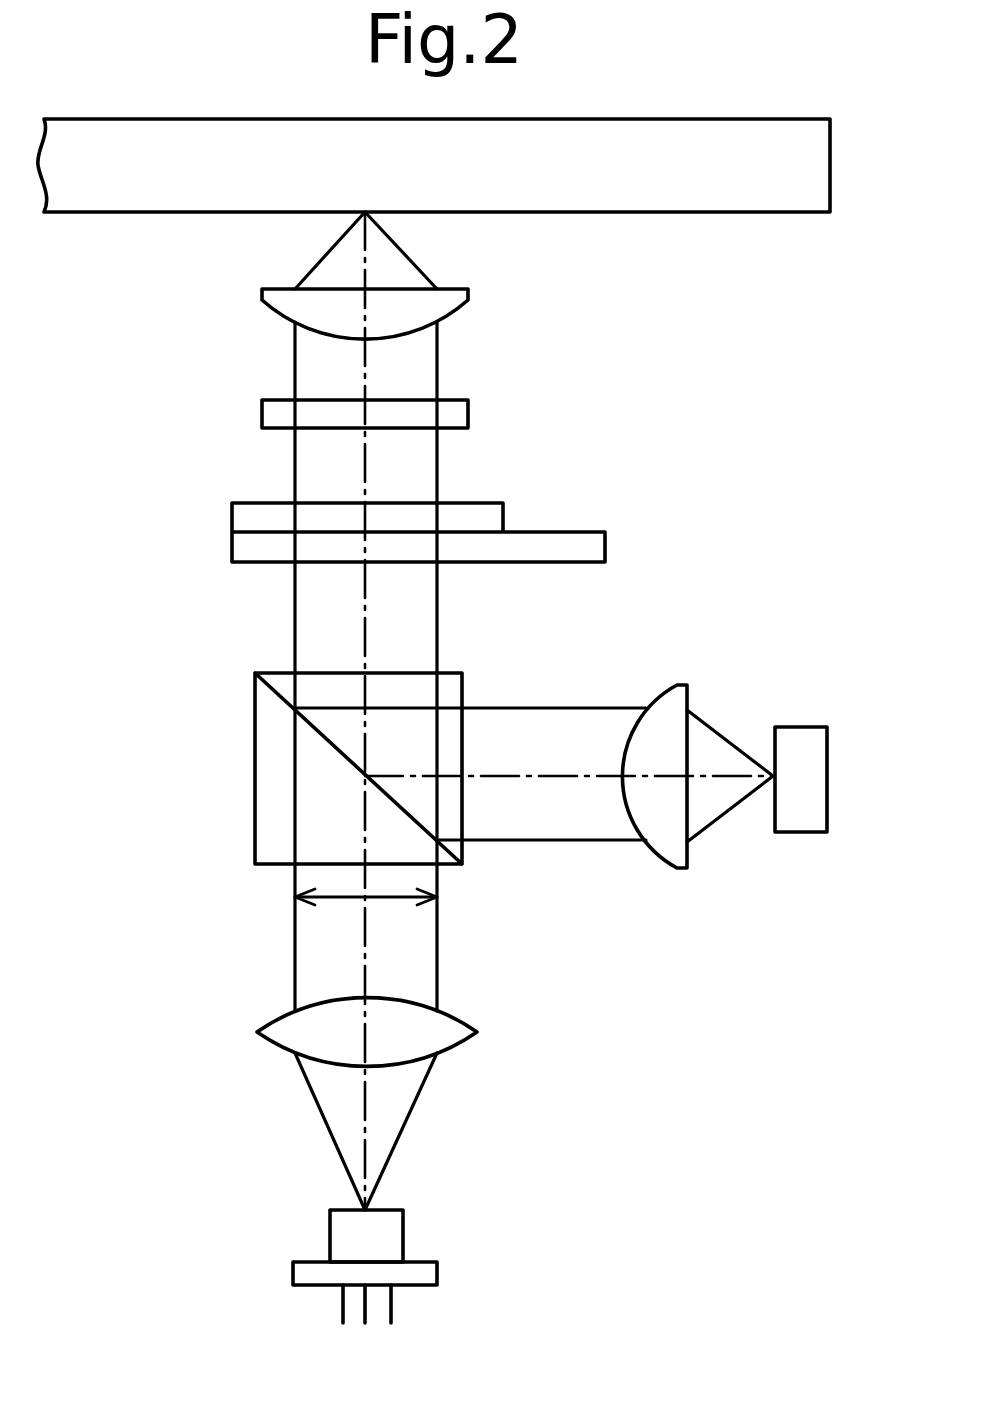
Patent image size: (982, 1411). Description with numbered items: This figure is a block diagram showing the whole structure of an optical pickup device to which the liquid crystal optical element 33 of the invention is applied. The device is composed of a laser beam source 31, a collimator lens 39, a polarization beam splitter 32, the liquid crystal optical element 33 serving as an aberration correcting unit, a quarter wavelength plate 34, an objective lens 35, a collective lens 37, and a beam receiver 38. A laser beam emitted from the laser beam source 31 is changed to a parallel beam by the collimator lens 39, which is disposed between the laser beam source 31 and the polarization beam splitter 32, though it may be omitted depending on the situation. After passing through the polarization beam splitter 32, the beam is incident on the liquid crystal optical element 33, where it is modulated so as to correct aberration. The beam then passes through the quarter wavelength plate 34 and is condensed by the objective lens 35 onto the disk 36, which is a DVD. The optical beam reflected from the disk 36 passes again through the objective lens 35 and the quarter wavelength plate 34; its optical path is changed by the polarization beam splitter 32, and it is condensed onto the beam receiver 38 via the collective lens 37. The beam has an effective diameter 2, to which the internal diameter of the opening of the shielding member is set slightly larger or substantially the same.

The effective diameter 2 is at (387, 897).
The laser beam source 31 is at (395, 1238).
The polarization beam splitter 32 is at (450, 687).
The liquid crystal optical element 33 is at (563, 538).
The quarter wavelength plate 34 is at (460, 413).
The objective lens 35 is at (455, 303).
The disk 36 is at (162, 190).
The collective lens 37 is at (673, 840).
The beam receiver 38 is at (802, 735).
The collimator lens 39 is at (463, 1015).